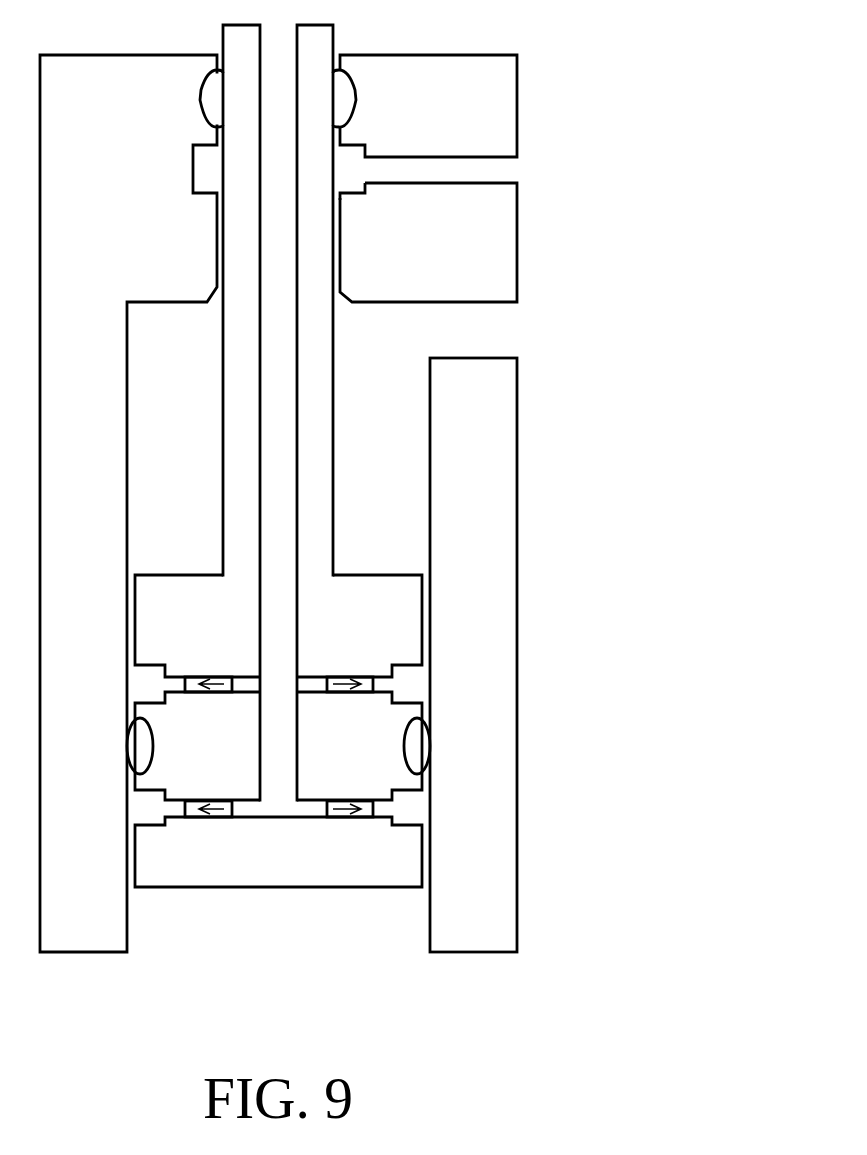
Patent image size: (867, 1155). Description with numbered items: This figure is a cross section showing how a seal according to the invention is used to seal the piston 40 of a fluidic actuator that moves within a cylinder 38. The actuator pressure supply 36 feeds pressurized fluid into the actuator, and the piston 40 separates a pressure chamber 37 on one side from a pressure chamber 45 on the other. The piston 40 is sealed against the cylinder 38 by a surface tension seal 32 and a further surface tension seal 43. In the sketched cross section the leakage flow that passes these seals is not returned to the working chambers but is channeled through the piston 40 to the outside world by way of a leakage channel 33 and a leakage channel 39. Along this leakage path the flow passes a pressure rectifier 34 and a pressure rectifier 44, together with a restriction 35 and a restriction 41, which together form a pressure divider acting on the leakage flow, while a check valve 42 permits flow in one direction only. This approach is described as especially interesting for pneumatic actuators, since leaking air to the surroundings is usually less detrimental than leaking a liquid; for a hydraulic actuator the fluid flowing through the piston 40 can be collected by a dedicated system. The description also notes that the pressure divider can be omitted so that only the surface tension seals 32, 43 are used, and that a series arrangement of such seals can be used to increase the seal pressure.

The surface tension seal 32 is at (355, 91).
The leakage channel 33 is at (438, 172).
The pressure rectifier 34 is at (353, 171).
The restriction 35 is at (337, 223).
The actuator pressure supply 36 is at (450, 328).
The pressure chamber 37 is at (382, 405).
The cylinder 38 is at (470, 465).
The leakage channel 39 is at (277, 547).
The piston 40 is at (372, 602).
The restriction 41 is at (425, 630).
The check valve 42 is at (372, 684).
The surface tension seal 43 is at (420, 745).
The pressure rectifier 44 is at (402, 807).
The pressure chamber 45 is at (355, 915).